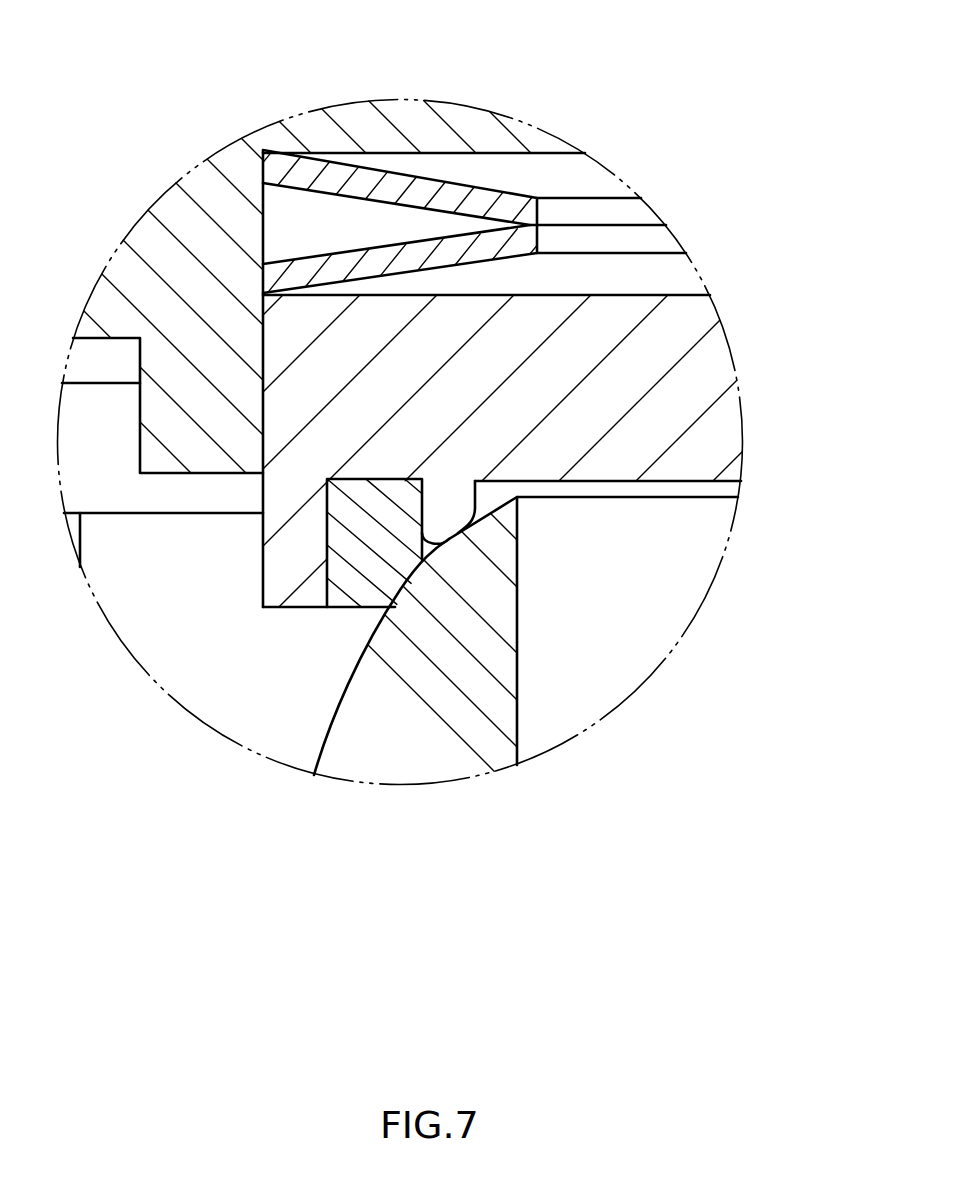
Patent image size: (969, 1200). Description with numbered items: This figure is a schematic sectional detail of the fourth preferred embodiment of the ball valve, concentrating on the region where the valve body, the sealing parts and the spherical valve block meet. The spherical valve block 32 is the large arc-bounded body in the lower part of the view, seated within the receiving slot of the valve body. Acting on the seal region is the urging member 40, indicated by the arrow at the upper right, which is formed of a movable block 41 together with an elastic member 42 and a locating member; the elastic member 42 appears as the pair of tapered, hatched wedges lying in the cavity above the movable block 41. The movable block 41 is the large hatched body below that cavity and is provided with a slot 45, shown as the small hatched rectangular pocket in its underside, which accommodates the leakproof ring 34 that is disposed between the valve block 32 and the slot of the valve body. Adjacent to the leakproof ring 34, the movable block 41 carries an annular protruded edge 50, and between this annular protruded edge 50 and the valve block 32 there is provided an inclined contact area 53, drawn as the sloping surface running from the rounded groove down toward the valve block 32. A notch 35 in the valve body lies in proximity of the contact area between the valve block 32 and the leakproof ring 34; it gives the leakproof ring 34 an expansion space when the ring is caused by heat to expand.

The valve block 32 is at (352, 667).
The leakproof ring 34 is at (350, 548).
The notch 35 is at (517, 653).
The urging member 40 is at (676, 181).
The movable block 41 is at (712, 357).
The elastic member 42 is at (442, 253).
The slot 45 is at (370, 480).
The annular protruded edge 50 is at (453, 520).
The inclined contact area 53 is at (460, 538).